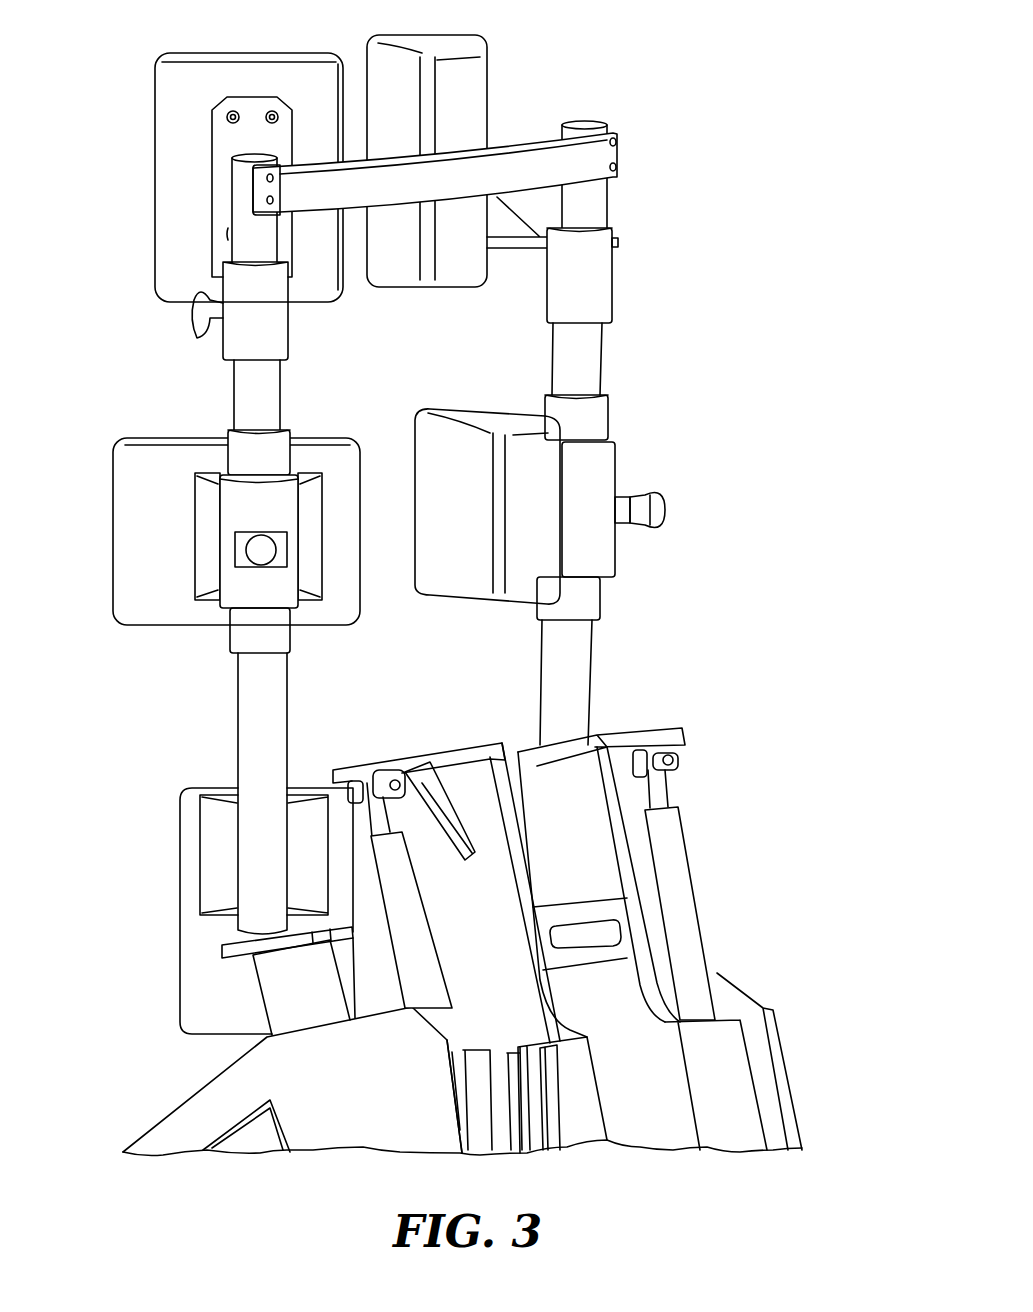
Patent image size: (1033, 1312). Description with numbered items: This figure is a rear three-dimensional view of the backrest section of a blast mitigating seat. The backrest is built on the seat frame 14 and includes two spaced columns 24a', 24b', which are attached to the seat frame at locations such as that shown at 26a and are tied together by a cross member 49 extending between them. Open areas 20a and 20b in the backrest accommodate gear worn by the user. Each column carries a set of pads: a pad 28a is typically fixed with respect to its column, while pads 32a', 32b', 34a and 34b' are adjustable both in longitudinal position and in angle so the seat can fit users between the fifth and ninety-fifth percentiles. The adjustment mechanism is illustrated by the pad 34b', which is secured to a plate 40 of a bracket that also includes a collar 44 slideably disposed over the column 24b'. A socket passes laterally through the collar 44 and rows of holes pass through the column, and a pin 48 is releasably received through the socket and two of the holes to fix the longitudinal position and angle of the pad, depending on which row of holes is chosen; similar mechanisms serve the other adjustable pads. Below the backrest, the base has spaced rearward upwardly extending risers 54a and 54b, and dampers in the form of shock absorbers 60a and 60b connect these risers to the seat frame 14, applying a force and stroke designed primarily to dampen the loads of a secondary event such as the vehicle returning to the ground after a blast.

The seat frame 14 is at (318, 1077).
The open area 20a is at (455, 356).
The open area 20b is at (450, 682).
The column 24a' is at (636, 359).
The column 24b' is at (202, 395).
The column attachment point 26a is at (255, 943).
The pad 28a is at (207, 783).
The pad 32a' is at (443, 498).
The pad 32b' is at (207, 509).
The pad 34a is at (382, 42).
The pad 34b' is at (221, 158).
The plate 40 is at (185, 173).
The collar 44 is at (275, 318).
The pin 48 is at (187, 327).
The cross member 49 is at (528, 167).
The riser 54a is at (408, 740).
The riser 54b is at (643, 727).
The shock absorber 60a is at (385, 865).
The shock absorber 60b is at (673, 843).